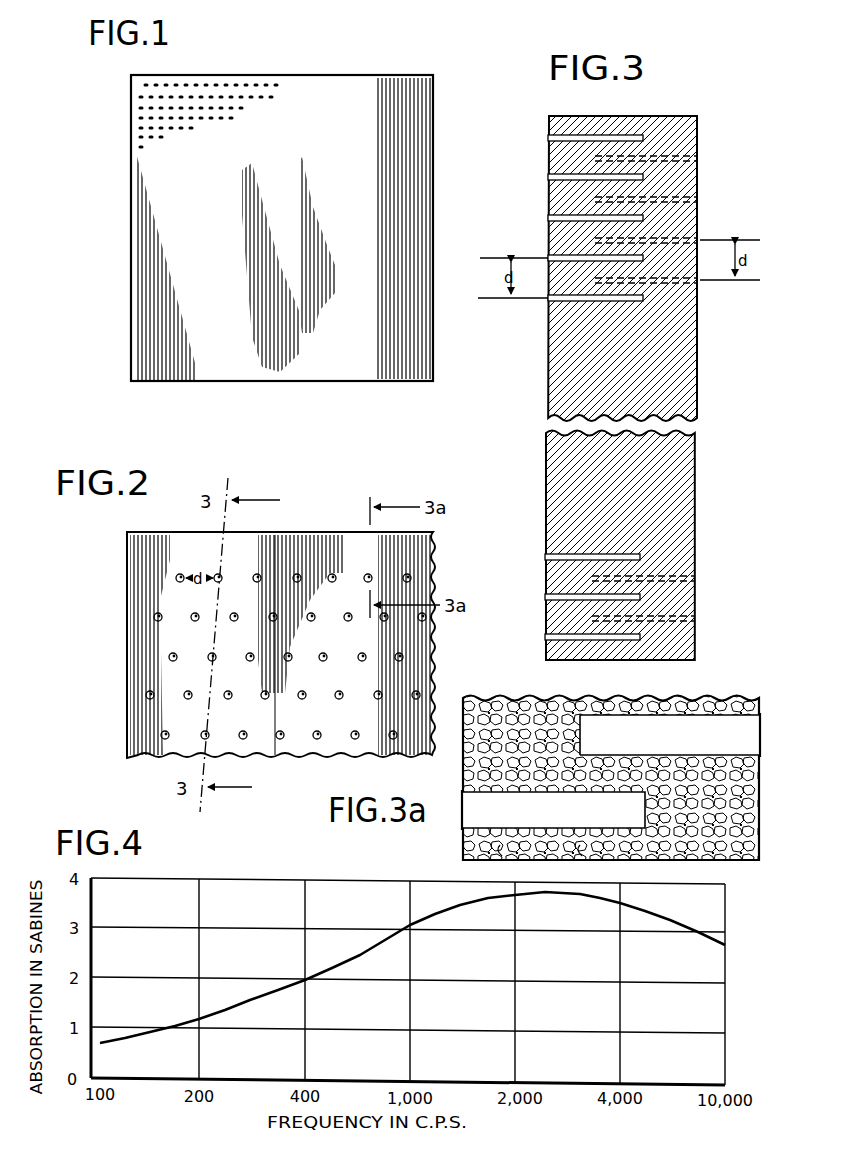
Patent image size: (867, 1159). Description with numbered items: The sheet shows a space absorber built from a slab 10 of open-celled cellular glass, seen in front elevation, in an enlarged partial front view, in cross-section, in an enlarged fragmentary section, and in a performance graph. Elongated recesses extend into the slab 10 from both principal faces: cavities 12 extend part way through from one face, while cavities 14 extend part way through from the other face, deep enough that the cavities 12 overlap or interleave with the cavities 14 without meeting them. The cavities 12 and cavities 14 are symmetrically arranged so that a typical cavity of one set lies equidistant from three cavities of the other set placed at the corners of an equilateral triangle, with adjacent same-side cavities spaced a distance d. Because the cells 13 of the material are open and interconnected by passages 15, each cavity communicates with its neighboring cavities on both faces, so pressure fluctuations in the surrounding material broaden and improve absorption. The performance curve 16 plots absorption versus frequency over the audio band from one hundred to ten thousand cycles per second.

In FIG. 1, the slab 10 is at (383, 86).
In FIG. 2, the slab 10 is at (385, 560).
In FIG. 3, the slab 10 is at (672, 136).
In FIG. 3A, the slab 10 is at (686, 870).
In FIG. 1, the cavities 12 is at (268, 86).
In FIG. 2, the cavities 12 is at (332, 578).
In FIG. 3, the cavities 12 is at (549, 177).
In FIG. 3A, the cavities 12 is at (474, 805).
In FIG. 3, the cavities 14 is at (700, 199).
In FIG. 3A, the cavities 14 is at (750, 730).
In FIG. 3A, the cells 13 is at (500, 858).
In FIG. 3A, the passages 15 is at (578, 858).
In FIG. 4, the performance curve 16 is at (343, 947).